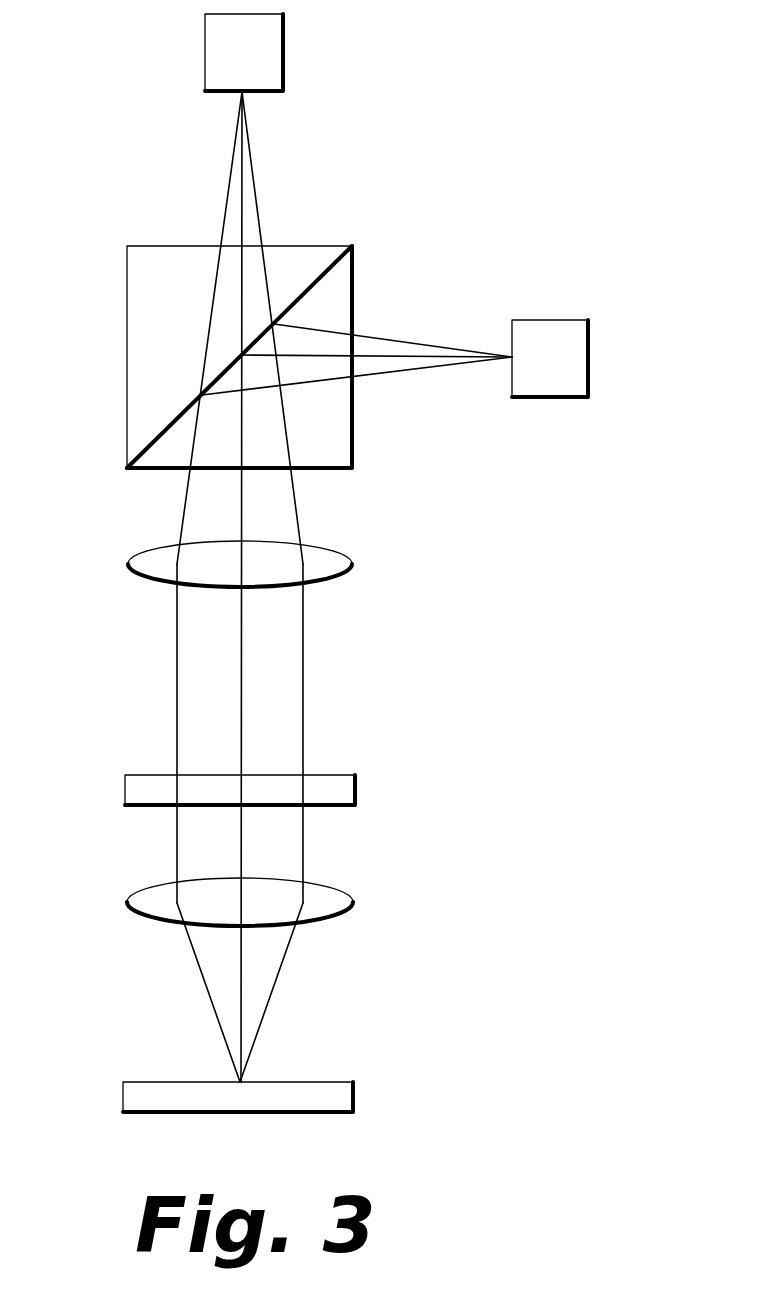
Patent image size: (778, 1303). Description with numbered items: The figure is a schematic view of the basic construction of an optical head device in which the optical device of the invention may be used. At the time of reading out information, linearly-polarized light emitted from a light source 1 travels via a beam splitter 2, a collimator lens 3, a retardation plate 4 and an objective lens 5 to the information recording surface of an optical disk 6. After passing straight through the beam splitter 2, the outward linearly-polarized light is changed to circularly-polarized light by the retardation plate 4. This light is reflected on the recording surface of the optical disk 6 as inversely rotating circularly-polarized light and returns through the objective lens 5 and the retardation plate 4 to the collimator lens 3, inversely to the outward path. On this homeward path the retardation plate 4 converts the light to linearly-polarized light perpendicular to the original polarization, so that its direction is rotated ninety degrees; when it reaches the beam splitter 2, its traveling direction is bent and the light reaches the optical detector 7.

The light source 1 is at (272, 52).
The beam splitter 2 is at (128, 337).
The collimator lens 3 is at (353, 563).
The retardation plate 4 is at (348, 788).
The objective lens 5 is at (353, 902).
The optical disk 6 is at (348, 1100).
The optical detector 7 is at (578, 360).